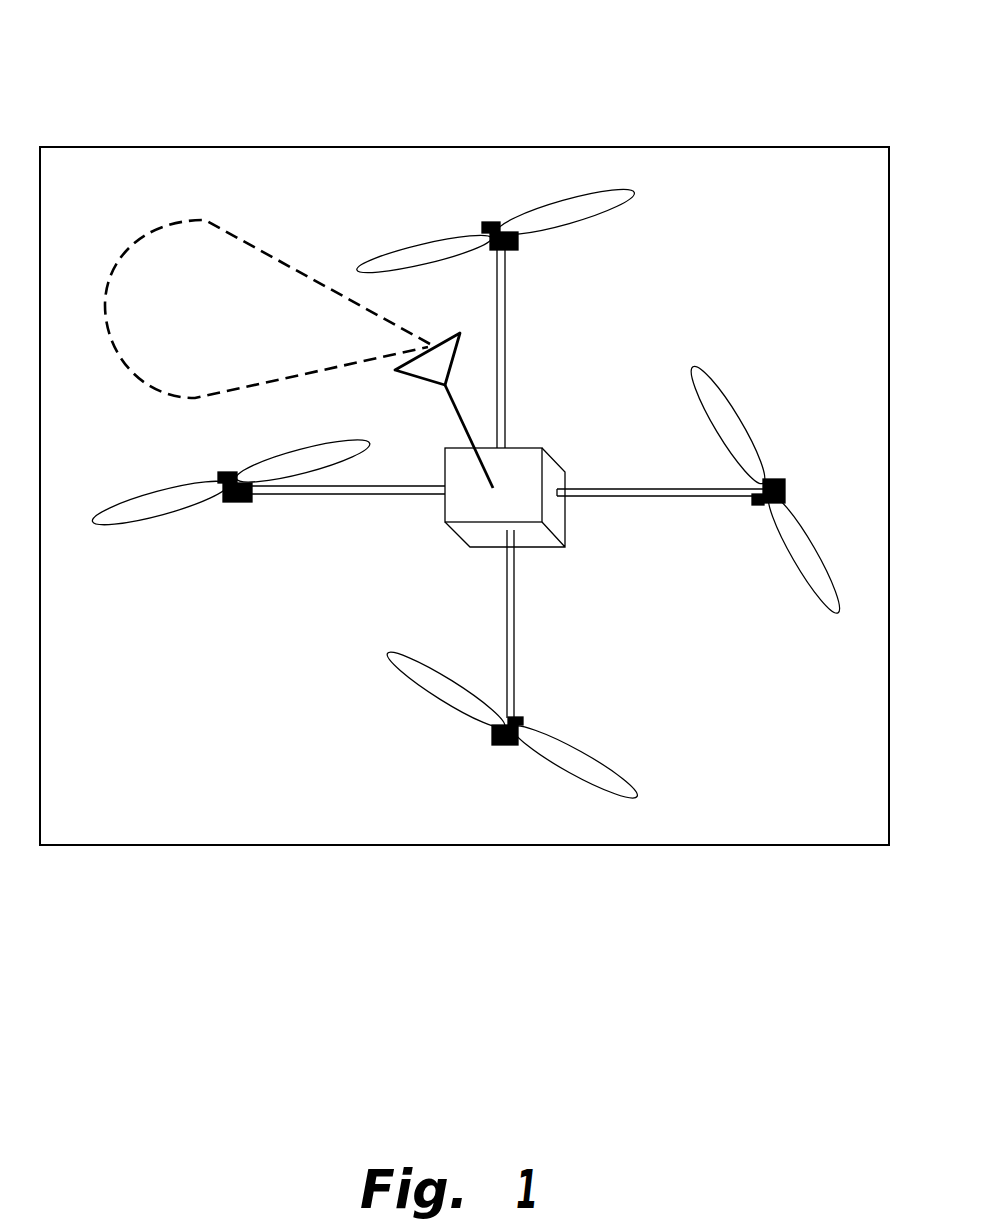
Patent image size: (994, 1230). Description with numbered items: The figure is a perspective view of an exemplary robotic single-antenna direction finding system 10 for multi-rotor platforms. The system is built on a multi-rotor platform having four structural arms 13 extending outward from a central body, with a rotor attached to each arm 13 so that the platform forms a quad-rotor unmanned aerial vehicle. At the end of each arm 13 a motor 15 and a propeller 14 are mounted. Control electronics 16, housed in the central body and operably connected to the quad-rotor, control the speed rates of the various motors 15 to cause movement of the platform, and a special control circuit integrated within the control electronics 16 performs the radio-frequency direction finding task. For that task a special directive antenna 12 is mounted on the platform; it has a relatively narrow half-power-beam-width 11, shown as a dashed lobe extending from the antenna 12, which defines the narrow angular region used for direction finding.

The single-antenna direction finding system 10 is at (355, 105).
The half-power-beam-width 11 is at (162, 223).
The directive antenna 12 is at (423, 378).
The structural arm 13 is at (315, 495).
The propeller 14 is at (610, 213).
The motor 15 is at (517, 237).
The control electronics 16 is at (565, 550).